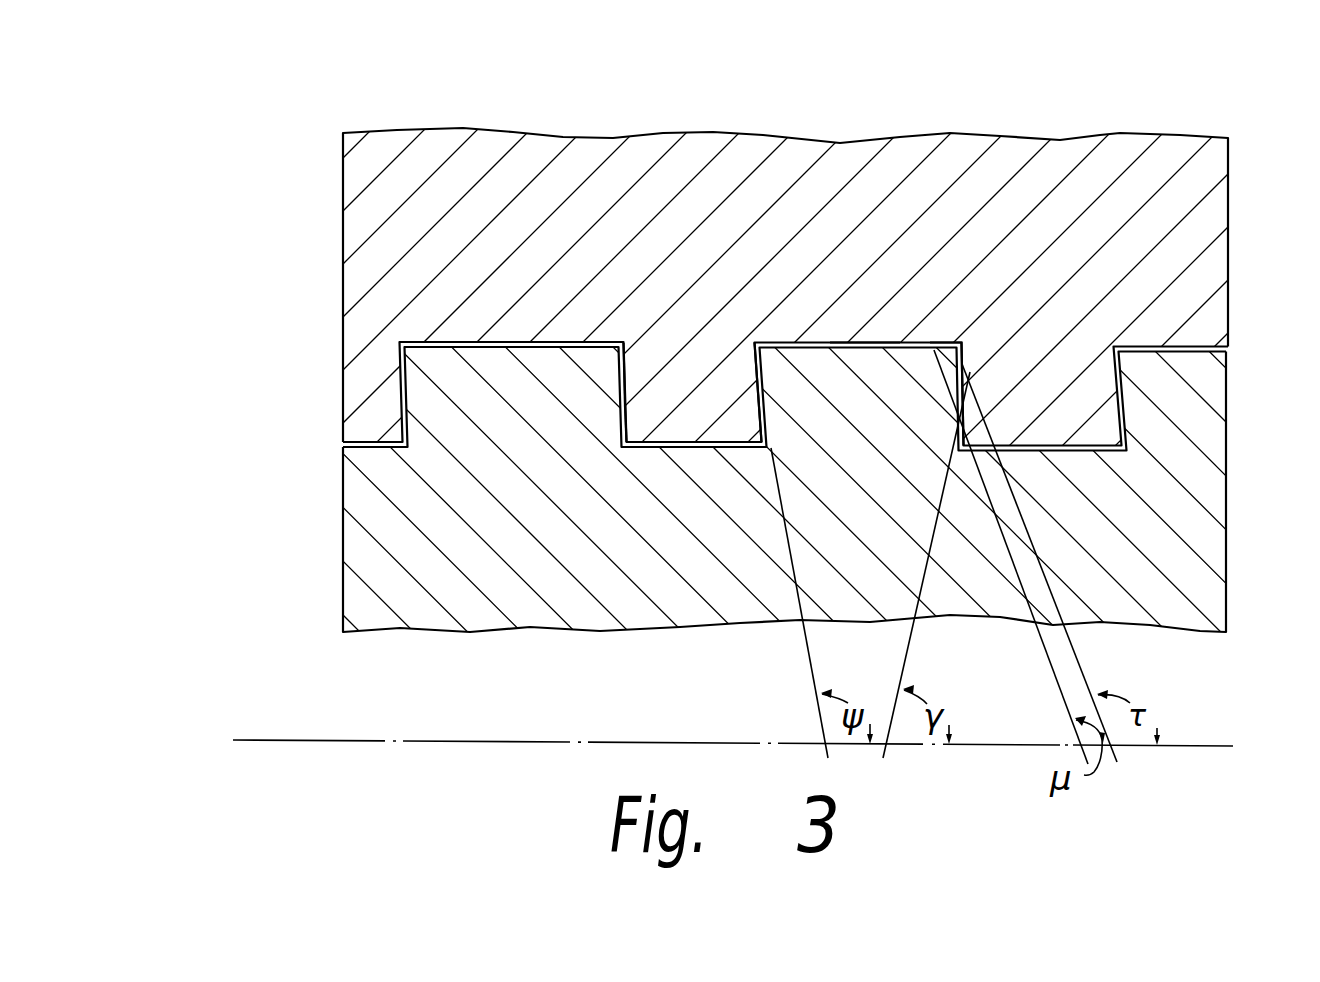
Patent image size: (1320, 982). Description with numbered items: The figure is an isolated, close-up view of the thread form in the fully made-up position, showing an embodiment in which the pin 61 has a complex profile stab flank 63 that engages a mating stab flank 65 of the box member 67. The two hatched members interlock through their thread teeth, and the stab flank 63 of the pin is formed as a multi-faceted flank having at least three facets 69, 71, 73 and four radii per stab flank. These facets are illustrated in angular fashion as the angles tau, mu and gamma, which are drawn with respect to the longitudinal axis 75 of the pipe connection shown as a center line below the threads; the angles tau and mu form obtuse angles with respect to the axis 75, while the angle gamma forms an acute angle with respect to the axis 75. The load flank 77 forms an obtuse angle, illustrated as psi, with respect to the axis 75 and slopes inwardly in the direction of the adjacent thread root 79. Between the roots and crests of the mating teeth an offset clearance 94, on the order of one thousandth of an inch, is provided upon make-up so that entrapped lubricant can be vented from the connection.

The pin 61 is at (355, 563).
The box member 67 is at (357, 306).
The complex profile stab flank 63 is at (958, 422).
The mating stab flank 65 is at (963, 365).
The facet 69 is at (624, 352).
The facet 71 is at (630, 393).
The facet 73 is at (628, 428).
The load flank 77 is at (745, 348).
The thread root 79 is at (719, 440).
The offset clearance 94 is at (863, 350).
The longitudinal axis 75 is at (1215, 746).